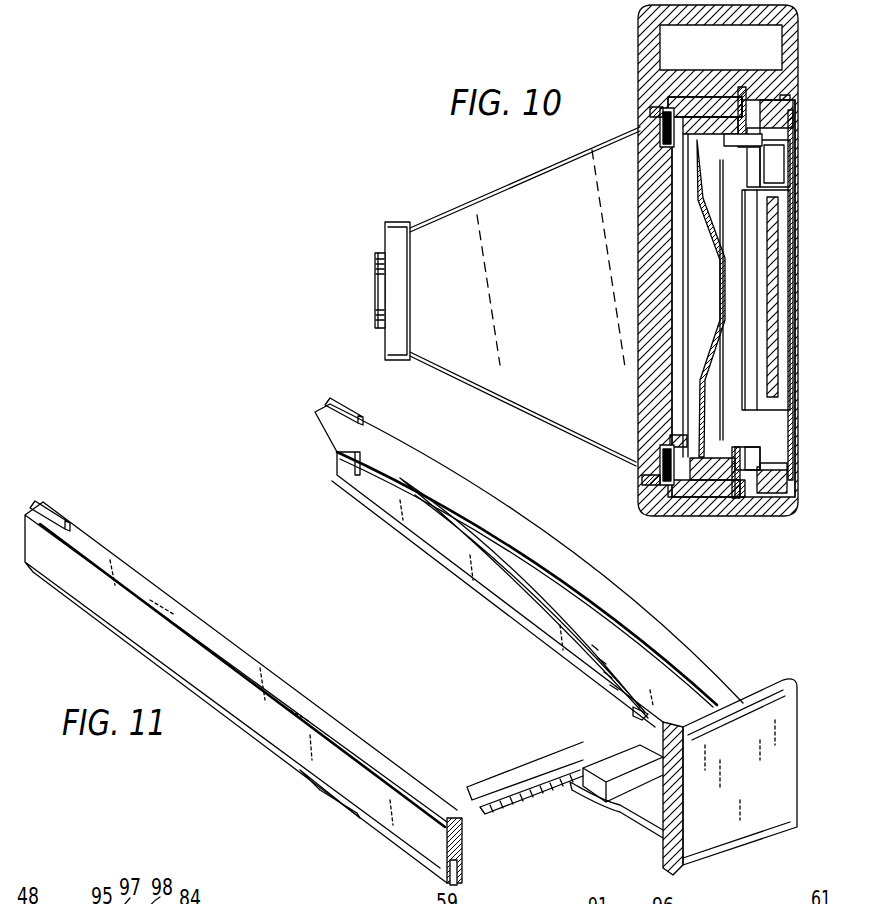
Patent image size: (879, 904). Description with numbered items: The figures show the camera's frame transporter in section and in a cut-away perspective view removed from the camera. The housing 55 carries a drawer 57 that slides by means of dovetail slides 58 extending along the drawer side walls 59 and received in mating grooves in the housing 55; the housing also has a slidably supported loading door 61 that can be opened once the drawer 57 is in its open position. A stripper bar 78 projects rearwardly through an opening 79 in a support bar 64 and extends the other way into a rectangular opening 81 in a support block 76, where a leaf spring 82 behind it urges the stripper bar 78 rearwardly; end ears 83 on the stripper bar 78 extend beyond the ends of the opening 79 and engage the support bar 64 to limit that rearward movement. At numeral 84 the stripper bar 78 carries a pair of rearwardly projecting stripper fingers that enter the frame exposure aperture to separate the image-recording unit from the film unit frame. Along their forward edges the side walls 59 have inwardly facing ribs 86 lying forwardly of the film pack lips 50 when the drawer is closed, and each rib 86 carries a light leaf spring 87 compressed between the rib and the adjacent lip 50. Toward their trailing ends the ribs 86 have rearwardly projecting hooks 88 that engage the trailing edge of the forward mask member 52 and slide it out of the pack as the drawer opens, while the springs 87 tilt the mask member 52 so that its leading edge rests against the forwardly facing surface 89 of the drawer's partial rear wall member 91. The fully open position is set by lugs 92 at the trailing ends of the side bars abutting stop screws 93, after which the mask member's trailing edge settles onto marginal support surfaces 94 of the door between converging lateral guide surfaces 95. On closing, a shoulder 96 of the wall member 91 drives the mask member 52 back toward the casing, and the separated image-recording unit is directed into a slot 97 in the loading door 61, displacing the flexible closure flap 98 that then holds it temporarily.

In FIG. 10, the lips 50 is at (612, 139).
In FIG. 10, the mask member 52 is at (689, 355).
In FIG. 10, the housing 55 is at (798, 42).
In FIG. 10, the drawer 57 is at (678, 95).
In FIG. 11, the drawer 57 is at (555, 557).
In FIG. 10, the dovetail slides 58 is at (690, 100).
In FIG. 11, the dovetail slides 58 is at (445, 840).
In FIG. 10, the side walls 59 is at (720, 100).
In FIG. 11, the side walls 59 is at (475, 562).
In FIG. 10, the loading door 61 is at (795, 482).
In FIG. 11, the loading door 61 is at (762, 805).
In FIG. 10, the support bar 64 is at (743, 97).
In FIG. 10, the support block 76 is at (724, 480).
In FIG. 10, the stripper bar 78 is at (735, 325).
In FIG. 10, the opening 79 is at (740, 447).
In FIG. 10, the rectangular opening 81 is at (705, 457).
In FIG. 10, the leaf spring 82 is at (717, 213).
In FIG. 10, the end ears 83 is at (728, 138).
In FIG. 10, the stripper fingers 84 is at (767, 173).
In FIG. 10, the ribs 86 is at (660, 125).
In FIG. 11, the ribs 86 is at (150, 560).
In FIG. 11, the leaf spring 87 is at (590, 660).
In FIG. 10, the hooks 88 is at (683, 128).
In FIG. 11, the hooks 88 is at (333, 458).
In FIG. 11, the forwardly facing surface 89 is at (583, 750).
In FIG. 10, the partial rear wall member 91 is at (780, 250).
In FIG. 11, the partial rear wall member 91 is at (583, 780).
In FIG. 11, the lugs 92 is at (40, 500).
In FIG. 10, the stop screws 93 is at (650, 110).
In FIG. 10, the marginal support surfaces 94 is at (760, 135).
In FIG. 10, the lateral guide surfaces 95 is at (767, 118).
In FIG. 11, the shoulder 96 is at (598, 762).
In FIG. 10, the slot 97 is at (785, 167).
In FIG. 10, the closure flap 98 is at (793, 280).